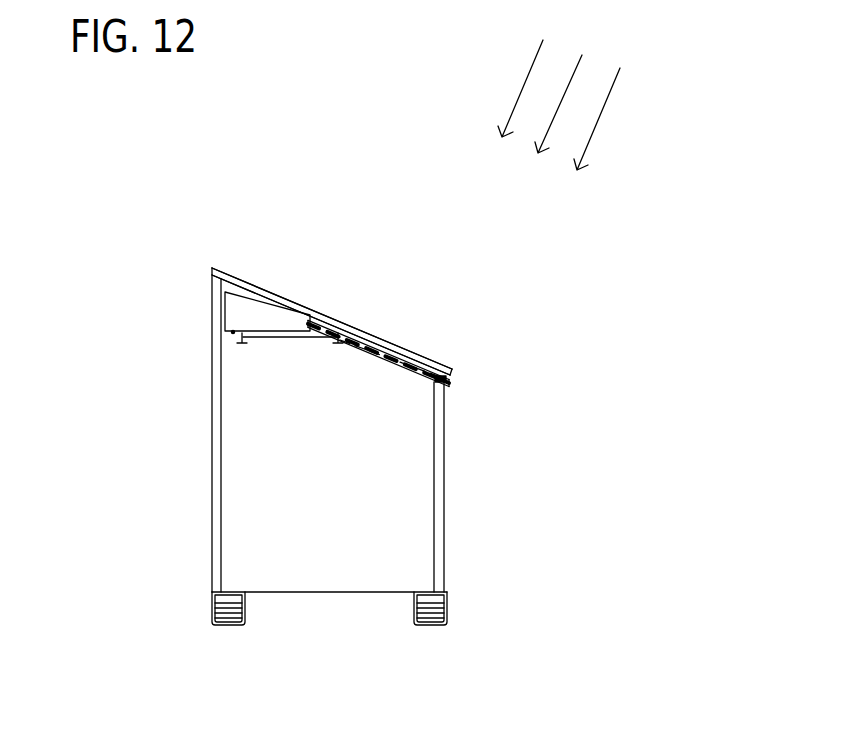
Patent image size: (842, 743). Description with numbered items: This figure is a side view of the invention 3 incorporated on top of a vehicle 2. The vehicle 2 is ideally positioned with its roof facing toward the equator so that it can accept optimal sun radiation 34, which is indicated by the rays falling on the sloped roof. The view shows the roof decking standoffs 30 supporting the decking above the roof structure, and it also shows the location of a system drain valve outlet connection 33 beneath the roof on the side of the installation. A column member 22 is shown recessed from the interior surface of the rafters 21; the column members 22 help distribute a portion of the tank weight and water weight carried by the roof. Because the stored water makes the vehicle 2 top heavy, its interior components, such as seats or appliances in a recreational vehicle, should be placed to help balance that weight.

The vehicle 2 is at (298, 610).
The invention 3 is at (279, 167).
The rafters 21 is at (450, 380).
The column member 22 is at (335, 315).
The roof decking standoffs 30 is at (448, 373).
The system drain valve outlet connection 33 is at (233, 332).
The sun radiation 34 is at (559, 88).